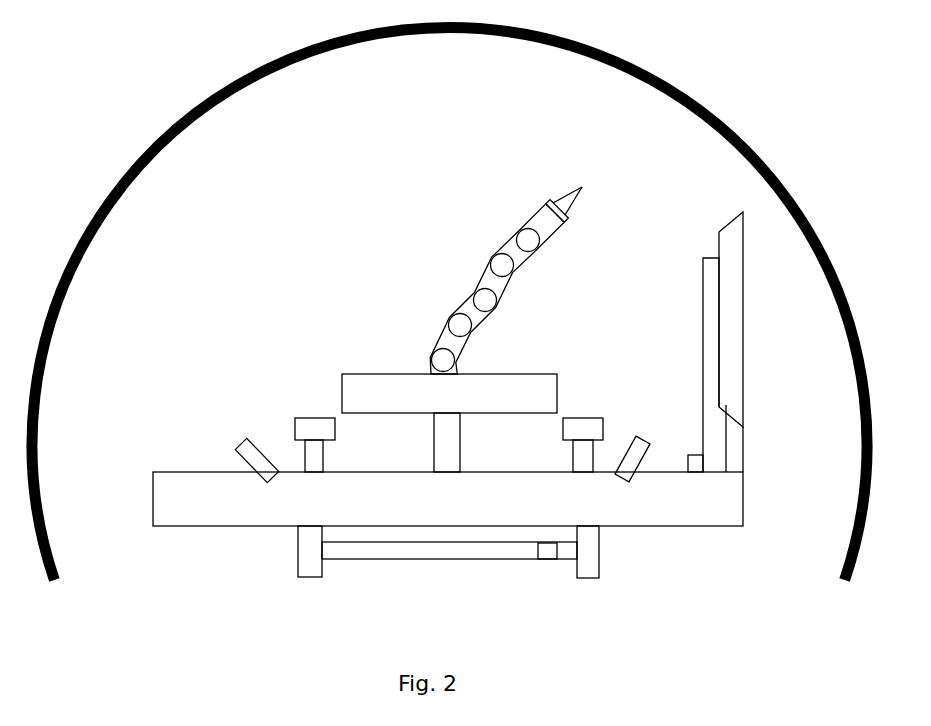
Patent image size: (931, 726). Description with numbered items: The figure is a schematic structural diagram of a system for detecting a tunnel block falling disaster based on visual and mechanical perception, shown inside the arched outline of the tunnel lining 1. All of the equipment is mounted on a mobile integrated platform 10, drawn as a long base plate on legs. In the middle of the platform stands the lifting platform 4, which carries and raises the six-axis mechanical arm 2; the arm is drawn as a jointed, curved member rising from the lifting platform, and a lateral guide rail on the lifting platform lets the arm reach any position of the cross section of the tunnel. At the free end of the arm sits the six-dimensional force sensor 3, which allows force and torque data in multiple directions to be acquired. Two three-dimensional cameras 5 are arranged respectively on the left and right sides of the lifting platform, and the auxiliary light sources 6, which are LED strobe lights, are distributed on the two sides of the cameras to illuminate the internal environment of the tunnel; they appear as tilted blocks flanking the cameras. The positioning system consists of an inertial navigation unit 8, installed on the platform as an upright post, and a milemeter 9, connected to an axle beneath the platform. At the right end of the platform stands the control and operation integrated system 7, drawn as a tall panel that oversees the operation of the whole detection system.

The tunnel lining 1 is at (753, 160).
The six-axis mechanical arm 2 is at (527, 226).
The six-dimensional force sensor 3 is at (555, 202).
The lifting platform 4 is at (365, 374).
The 3D cameras 5 is at (305, 418).
The auxiliary light sources 6 is at (247, 437).
The control and operation integrated system 7 is at (743, 315).
The inertial navigation unit 8 is at (697, 457).
The milemeter 9 is at (555, 559).
The mobile integrated platform 10 is at (545, 525).